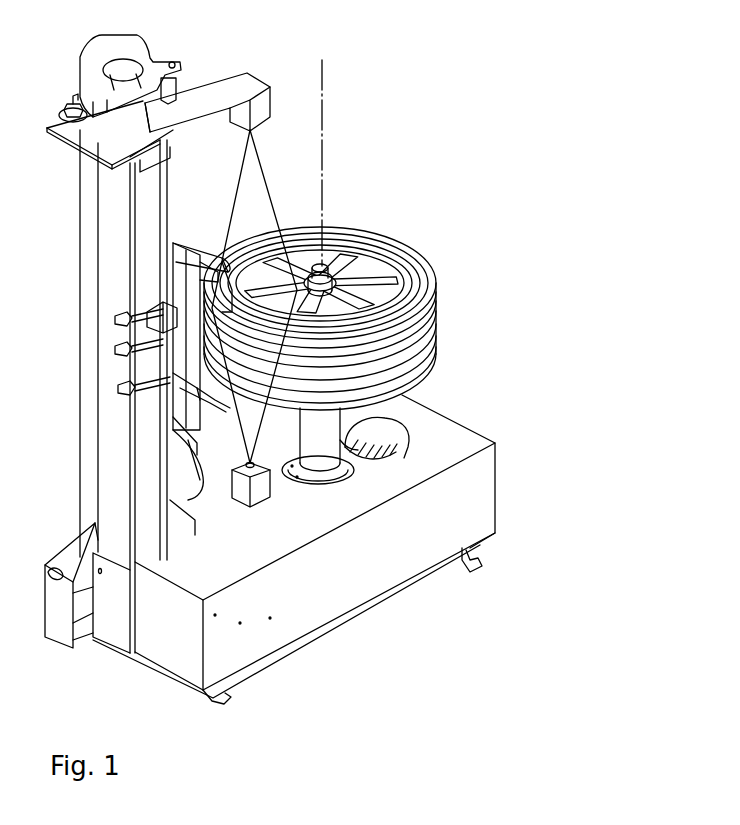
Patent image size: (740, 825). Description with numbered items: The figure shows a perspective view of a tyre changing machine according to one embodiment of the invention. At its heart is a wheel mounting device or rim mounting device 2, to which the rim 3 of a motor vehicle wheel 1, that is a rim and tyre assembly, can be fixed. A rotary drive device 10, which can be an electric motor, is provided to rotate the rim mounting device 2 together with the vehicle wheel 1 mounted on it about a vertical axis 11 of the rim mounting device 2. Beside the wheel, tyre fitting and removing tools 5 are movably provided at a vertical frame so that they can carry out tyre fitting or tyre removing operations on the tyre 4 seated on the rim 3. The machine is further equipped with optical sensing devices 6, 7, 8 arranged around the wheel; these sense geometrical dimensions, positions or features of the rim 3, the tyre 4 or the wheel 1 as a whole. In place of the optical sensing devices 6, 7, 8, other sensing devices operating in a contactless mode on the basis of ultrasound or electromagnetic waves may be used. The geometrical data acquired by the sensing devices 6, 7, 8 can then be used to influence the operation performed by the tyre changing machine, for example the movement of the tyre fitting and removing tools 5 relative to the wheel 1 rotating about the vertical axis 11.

The motor vehicle wheel 1 is at (363, 215).
The rim mounting device 2 is at (332, 458).
The rim 3 is at (405, 249).
The tyre 4 is at (423, 328).
The tyre fitting and removing tools 5 is at (238, 238).
The optical sensing device 6 is at (265, 100).
The optical sensing device 7 is at (262, 490).
The optical sensing device 8 is at (190, 388).
The rotary drive device 10 is at (357, 429).
The vertical axis 11 is at (323, 130).